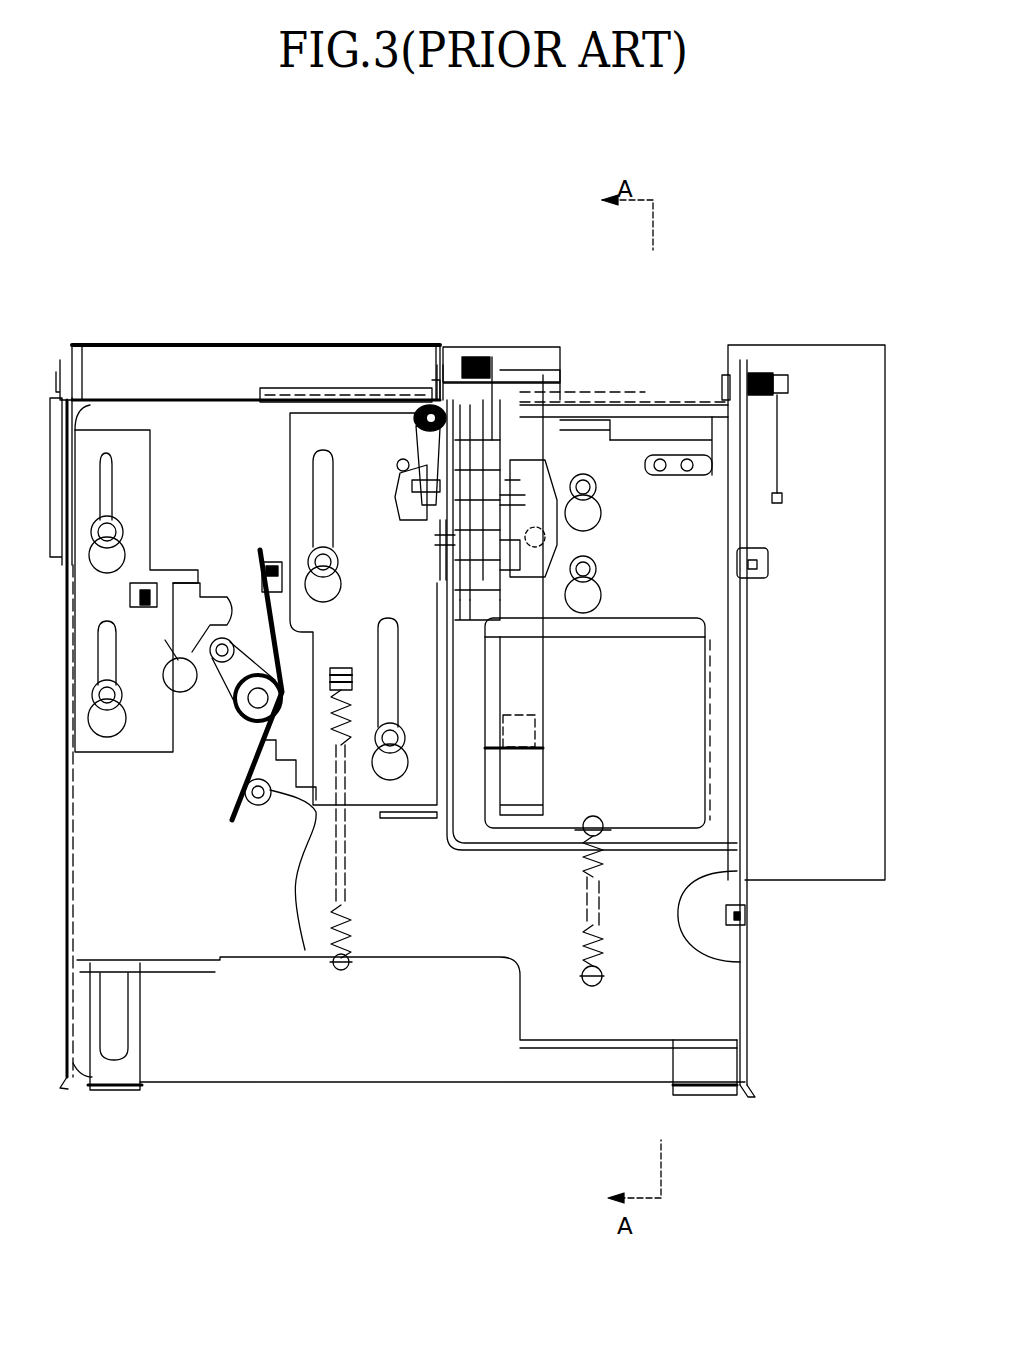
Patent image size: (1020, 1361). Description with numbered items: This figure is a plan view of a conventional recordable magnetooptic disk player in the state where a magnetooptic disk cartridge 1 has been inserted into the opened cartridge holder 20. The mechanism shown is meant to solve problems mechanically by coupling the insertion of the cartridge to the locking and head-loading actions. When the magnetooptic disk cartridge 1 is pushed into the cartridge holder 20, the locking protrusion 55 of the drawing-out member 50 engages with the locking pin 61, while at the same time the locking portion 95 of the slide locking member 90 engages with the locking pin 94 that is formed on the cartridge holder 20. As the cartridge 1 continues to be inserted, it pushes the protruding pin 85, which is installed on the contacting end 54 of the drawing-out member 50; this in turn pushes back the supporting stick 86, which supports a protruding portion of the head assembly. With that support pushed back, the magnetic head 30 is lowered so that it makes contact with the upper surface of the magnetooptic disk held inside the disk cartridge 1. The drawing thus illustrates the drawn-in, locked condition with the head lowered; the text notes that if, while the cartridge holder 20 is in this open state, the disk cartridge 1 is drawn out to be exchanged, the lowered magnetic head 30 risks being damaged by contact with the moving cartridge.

The magnetooptic disk cartridge 1 is at (175, 1082).
The cartridge holder 20 is at (752, 1060).
The magnetic head 30 is at (542, 749).
The drawing-out member 50 is at (410, 820).
The contacting end 54 is at (382, 398).
The locking protrusion 55 is at (270, 800).
The locking pin 61 is at (258, 806).
The protruding pin 85 is at (587, 382).
The supporting stick 86 is at (658, 430).
The slide locking member 90 is at (563, 538).
The locking pin 94 is at (485, 565).
The locking portion 95 is at (427, 547).